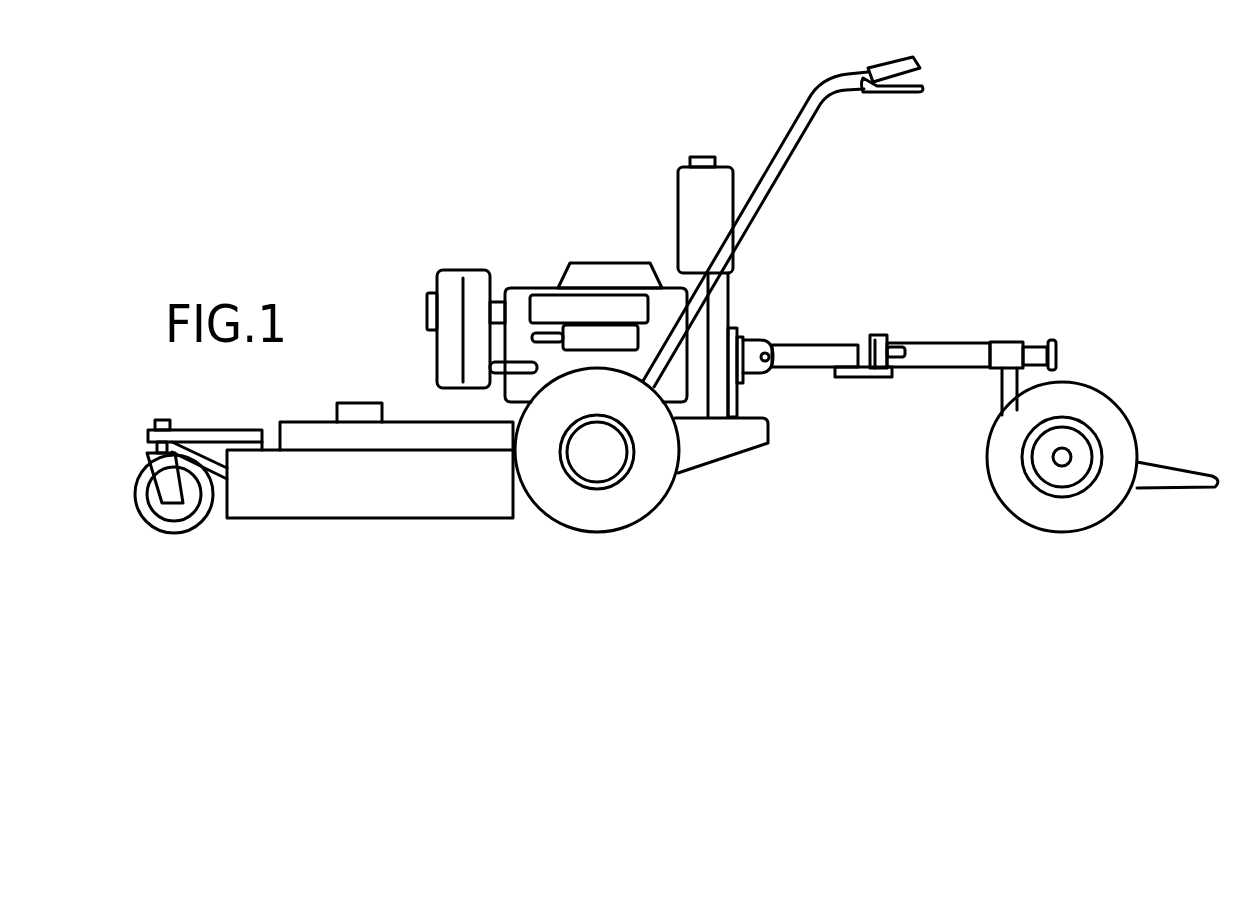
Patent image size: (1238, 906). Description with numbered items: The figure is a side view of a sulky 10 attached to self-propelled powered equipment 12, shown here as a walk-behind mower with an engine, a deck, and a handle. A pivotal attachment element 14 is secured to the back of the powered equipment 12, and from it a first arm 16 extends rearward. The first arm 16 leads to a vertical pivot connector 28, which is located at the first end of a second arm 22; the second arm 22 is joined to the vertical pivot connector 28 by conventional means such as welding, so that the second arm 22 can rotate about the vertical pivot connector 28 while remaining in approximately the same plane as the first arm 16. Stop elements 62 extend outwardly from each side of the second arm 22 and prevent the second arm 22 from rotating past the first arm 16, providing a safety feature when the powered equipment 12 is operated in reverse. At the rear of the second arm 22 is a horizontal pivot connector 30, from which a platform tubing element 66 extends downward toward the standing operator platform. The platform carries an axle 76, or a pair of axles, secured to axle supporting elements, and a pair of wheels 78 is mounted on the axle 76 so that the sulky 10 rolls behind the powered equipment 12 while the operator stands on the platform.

The sulky 10 is at (995, 354).
The powered equipment 12 is at (593, 250).
The pivotal attachment element 14 is at (740, 322).
The first arm 16 is at (805, 368).
The second arm 22 is at (925, 340).
The vertical pivot connector 28 is at (877, 350).
The horizontal pivot connector 30 is at (1008, 392).
The stop elements 62 is at (888, 337).
The platform tubing element 66 is at (1053, 343).
The axle 76 is at (1068, 455).
The wheels 78 is at (1110, 422).